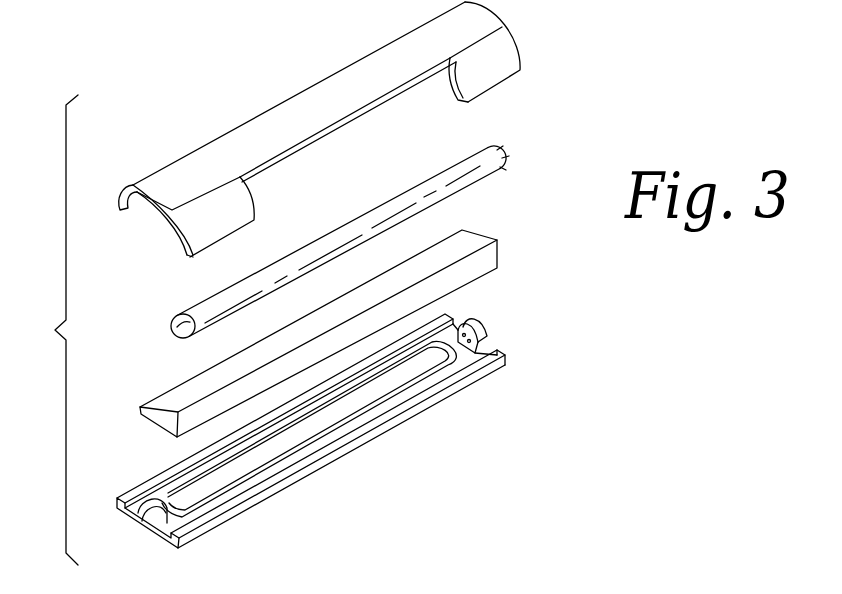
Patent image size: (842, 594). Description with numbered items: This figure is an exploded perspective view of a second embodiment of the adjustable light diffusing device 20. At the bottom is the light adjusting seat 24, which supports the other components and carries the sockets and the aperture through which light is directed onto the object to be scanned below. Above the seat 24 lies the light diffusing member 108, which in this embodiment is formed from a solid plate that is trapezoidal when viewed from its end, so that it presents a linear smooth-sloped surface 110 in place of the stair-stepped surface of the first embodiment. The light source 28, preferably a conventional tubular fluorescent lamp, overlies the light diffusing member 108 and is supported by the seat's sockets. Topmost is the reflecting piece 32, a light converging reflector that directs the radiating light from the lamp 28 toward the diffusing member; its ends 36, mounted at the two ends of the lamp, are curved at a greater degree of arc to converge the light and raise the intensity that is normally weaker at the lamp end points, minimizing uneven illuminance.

The adjustable light diffusing device 20 is at (49, 330).
The light adjusting seat 24 is at (500, 352).
The light source 28 is at (483, 170).
The reflecting piece 32 is at (350, 146).
The end of reflecting piece 36 is at (198, 232).
The light diffusing member 108 is at (325, 333).
The linear smooth-sloped surface 110 is at (165, 402).